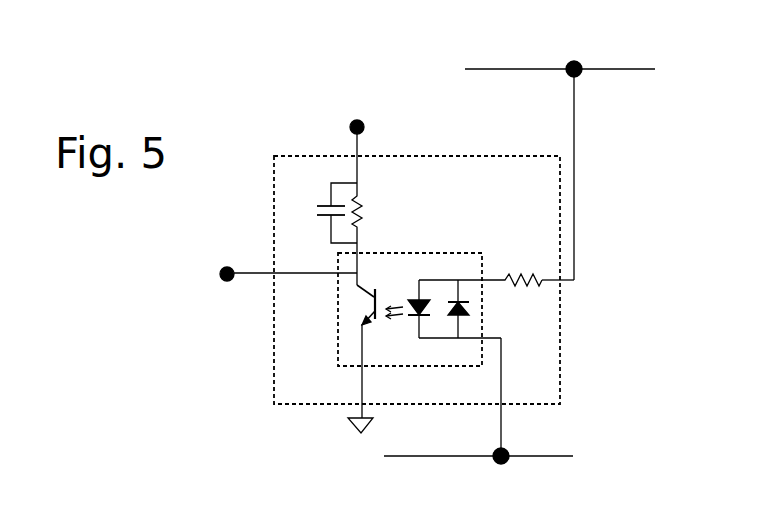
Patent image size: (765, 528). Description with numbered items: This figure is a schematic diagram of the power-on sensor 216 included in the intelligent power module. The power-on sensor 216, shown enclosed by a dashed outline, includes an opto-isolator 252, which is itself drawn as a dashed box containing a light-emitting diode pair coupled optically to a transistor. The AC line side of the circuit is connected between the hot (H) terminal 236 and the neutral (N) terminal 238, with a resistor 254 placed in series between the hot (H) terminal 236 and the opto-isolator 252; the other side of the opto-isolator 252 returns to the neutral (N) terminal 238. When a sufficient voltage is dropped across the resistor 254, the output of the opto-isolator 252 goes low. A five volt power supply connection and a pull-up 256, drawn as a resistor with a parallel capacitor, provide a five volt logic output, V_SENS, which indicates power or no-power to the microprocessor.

The power-on sensor 216 is at (432, 156).
The opto-isolator 252 is at (432, 253).
The resistor 254 is at (512, 277).
The pull-up 256 is at (360, 213).
The hot (H) terminal 236 is at (579, 64).
The neutral (N) terminal 238 is at (504, 463).